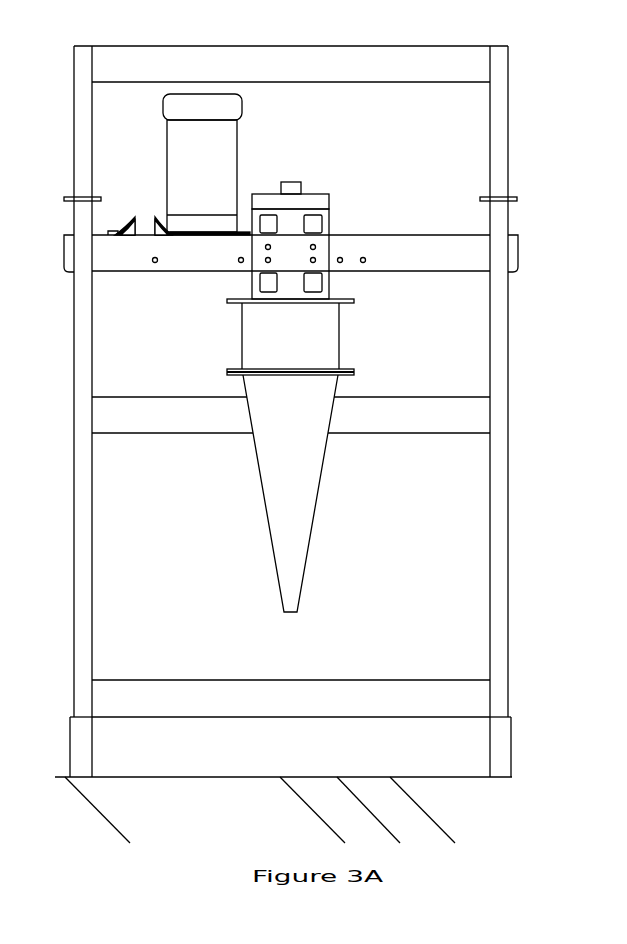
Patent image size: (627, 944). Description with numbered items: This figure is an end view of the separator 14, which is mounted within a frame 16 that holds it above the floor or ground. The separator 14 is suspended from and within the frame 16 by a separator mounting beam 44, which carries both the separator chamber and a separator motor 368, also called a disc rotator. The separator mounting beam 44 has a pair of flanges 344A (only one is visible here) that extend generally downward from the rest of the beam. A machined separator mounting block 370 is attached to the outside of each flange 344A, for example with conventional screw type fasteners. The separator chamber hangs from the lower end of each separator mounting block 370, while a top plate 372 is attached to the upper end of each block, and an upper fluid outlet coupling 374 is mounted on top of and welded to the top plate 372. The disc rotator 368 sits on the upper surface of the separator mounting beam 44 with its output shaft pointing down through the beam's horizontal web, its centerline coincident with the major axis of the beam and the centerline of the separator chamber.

The separator 14 is at (370, 320).
The frame 16 is at (456, 705).
The separator mounting beam 44 is at (110, 275).
The flange 344A is at (455, 255).
The separator motor 368 is at (162, 148).
The separator mounting block 370 is at (330, 217).
The top plate 372 is at (313, 198).
The upper fluid outlet coupling 374 is at (298, 185).